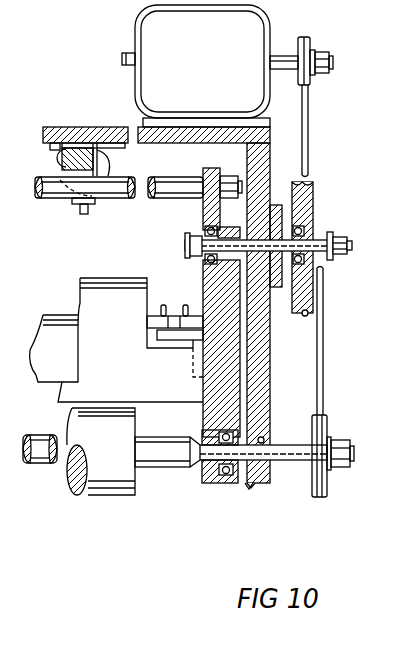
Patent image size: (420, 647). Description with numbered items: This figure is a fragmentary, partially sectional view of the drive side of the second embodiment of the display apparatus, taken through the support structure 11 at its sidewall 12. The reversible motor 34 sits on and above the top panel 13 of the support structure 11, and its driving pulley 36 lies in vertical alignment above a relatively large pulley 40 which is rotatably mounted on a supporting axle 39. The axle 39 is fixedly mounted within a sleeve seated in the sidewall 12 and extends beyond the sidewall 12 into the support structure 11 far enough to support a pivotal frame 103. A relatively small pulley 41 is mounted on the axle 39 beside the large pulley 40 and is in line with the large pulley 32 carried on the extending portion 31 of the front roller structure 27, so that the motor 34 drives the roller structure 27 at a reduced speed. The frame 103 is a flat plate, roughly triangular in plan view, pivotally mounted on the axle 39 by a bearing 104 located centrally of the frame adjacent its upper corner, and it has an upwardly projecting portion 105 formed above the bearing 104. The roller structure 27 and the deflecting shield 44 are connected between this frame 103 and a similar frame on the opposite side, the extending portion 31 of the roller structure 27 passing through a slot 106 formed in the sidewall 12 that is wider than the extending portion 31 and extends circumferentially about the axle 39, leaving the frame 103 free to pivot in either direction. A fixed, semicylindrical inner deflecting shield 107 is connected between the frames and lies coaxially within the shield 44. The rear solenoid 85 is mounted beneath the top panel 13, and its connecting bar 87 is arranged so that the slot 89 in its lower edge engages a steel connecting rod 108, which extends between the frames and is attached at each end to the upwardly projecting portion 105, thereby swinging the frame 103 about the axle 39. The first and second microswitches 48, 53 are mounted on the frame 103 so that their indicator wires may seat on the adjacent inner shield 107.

The reversible motor 34 is at (136, 26).
The driving pulley 36 is at (310, 45).
The top panel 13 is at (63, 127).
The connecting bar 87 is at (95, 140).
The slot 89 is at (113, 173).
The rear solenoid 85 is at (63, 203).
The connecting rod 108 is at (134, 200).
The upwardly projecting portion 105 is at (214, 166).
The bearing 104 is at (205, 230).
The sidewall 12 is at (256, 484).
The large pulley 40 is at (315, 200).
The axle 39 is at (352, 250).
The small pulley 41 is at (325, 268).
The deflecting shield 44 is at (81, 288).
The inner deflecting shield 107 is at (43, 330).
The first microswitch 48 is at (160, 322).
The second microswitch 53 is at (186, 336).
The front roller structure 27 is at (96, 501).
The extending portion 31 is at (293, 458).
The pivotal frame 103 is at (206, 488).
The slot 106 is at (268, 440).
The support structure 11 is at (246, 496).
The large pulley 32 is at (328, 428).